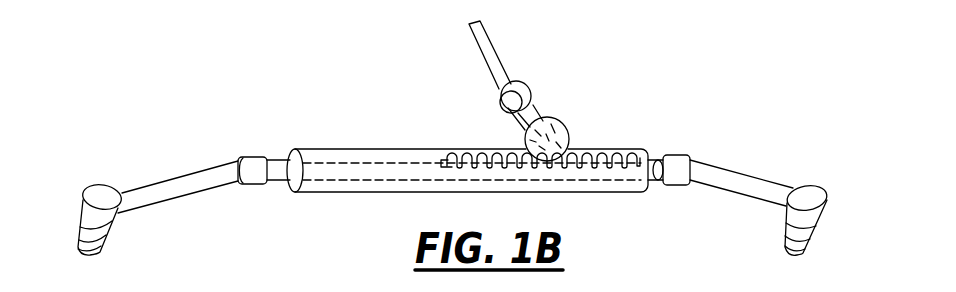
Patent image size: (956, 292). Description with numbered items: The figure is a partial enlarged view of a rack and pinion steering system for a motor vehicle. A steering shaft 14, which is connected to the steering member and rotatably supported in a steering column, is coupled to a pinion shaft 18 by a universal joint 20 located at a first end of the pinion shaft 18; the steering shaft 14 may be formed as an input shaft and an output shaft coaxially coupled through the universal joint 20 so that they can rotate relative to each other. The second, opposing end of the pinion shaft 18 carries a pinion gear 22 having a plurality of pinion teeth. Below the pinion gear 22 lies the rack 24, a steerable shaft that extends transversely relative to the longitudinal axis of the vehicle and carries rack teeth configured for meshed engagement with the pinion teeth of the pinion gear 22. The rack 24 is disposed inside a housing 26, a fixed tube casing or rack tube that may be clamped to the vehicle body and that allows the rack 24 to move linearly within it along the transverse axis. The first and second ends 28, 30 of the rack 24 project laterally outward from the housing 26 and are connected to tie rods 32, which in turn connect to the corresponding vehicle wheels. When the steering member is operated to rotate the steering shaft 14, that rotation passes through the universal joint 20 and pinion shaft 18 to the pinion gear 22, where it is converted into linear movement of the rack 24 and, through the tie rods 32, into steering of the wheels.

The steering shaft 14 is at (485, 33).
The pinion shaft 18 is at (533, 113).
The universal joint 20 is at (502, 100).
The pinion gear 22 is at (558, 133).
The rack 24 is at (453, 158).
The housing 26 is at (342, 150).
The first end of rack 28 is at (277, 178).
The second end of rack 30 is at (662, 173).
The tie rods 32 is at (175, 182).